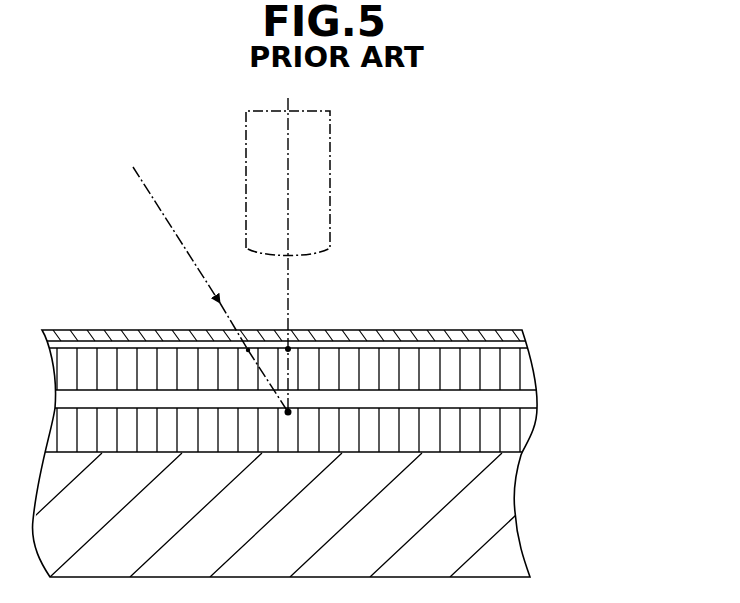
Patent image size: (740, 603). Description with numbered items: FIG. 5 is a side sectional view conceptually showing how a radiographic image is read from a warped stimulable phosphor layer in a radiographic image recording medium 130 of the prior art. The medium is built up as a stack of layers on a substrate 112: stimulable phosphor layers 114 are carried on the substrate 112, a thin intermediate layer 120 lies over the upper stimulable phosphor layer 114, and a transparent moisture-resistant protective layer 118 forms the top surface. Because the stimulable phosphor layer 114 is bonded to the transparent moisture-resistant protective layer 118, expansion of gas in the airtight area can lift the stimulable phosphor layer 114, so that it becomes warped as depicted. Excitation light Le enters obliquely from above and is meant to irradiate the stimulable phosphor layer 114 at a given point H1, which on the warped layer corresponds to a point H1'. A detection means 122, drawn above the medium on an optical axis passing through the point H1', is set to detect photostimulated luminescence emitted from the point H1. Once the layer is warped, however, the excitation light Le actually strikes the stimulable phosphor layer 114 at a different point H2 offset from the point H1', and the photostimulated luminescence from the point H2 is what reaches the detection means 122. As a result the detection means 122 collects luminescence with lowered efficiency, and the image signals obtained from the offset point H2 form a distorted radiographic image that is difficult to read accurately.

The optical recording medium (prior art) 130 is at (307, 357).
The substrate 112 is at (495, 507).
The stimulable phosphor layer 114 is at (527, 378).
The transparent moisture-resistant protective layer 118 is at (523, 332).
The intermediate layer 120 is at (528, 342).
The detection means 122 is at (315, 172).
The excitation light Le is at (178, 233).
The given point H1 is at (355, 354).
The point on the warped stimulable phosphor layer H1' is at (318, 317).
The point H2 is at (248, 352).